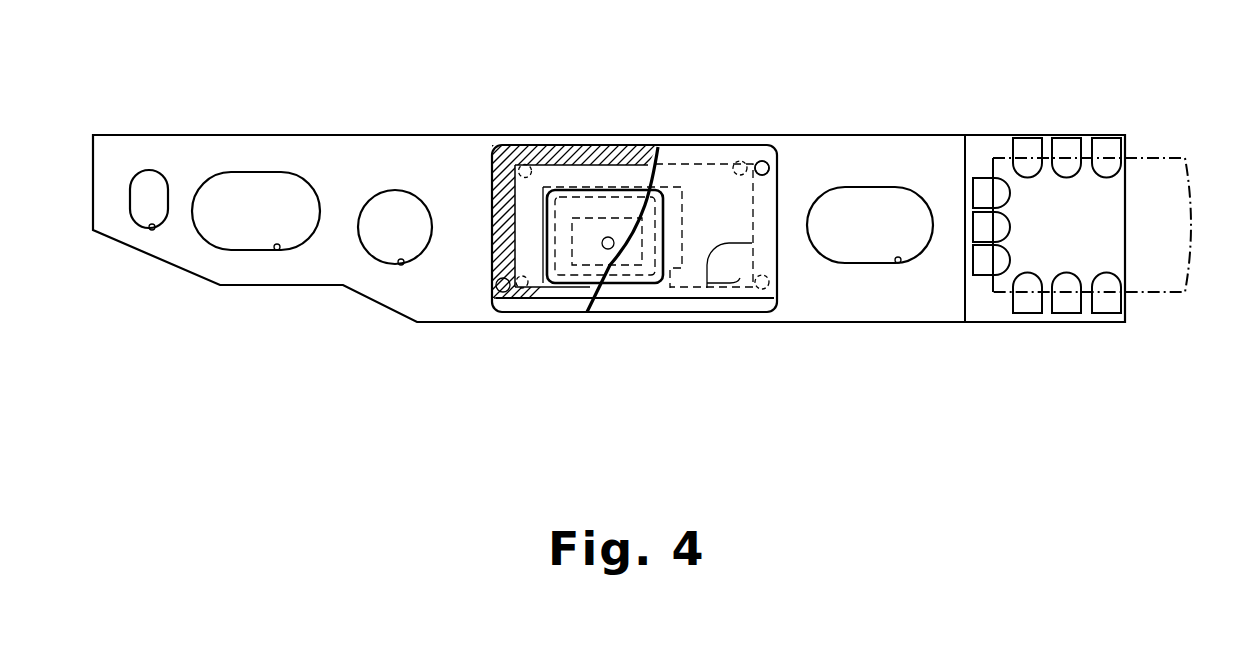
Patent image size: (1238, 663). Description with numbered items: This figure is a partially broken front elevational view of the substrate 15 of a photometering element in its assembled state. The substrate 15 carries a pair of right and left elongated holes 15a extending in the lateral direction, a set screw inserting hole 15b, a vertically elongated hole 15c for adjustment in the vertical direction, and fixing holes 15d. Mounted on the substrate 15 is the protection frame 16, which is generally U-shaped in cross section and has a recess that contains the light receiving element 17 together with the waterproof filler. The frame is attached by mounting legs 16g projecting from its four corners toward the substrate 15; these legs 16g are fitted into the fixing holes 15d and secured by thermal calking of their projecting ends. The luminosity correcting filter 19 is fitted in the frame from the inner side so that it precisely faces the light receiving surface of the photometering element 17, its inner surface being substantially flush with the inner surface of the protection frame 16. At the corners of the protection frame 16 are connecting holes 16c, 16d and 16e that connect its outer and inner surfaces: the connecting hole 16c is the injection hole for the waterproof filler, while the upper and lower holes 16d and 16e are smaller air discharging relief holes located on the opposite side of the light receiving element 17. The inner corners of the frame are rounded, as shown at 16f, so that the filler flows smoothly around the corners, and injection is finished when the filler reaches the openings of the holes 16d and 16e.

The substrate 15 is at (333, 165).
The elongated holes 15a is at (277, 250).
The set screw inserting hole 15b is at (400, 265).
The vertically elongated hole 15c is at (152, 230).
The fixing holes 15d is at (883, 105).
The protection frame 16 is at (497, 150).
The connecting hole 16c is at (723, 275).
The connecting hole 16d is at (532, 164).
The connecting hole 16e is at (523, 303).
The rounded inner corners 16f is at (737, 167).
The mounting legs 16g is at (768, 165).
The light receiving element 17 is at (622, 190).
The luminosity correcting filter 19 is at (547, 237).